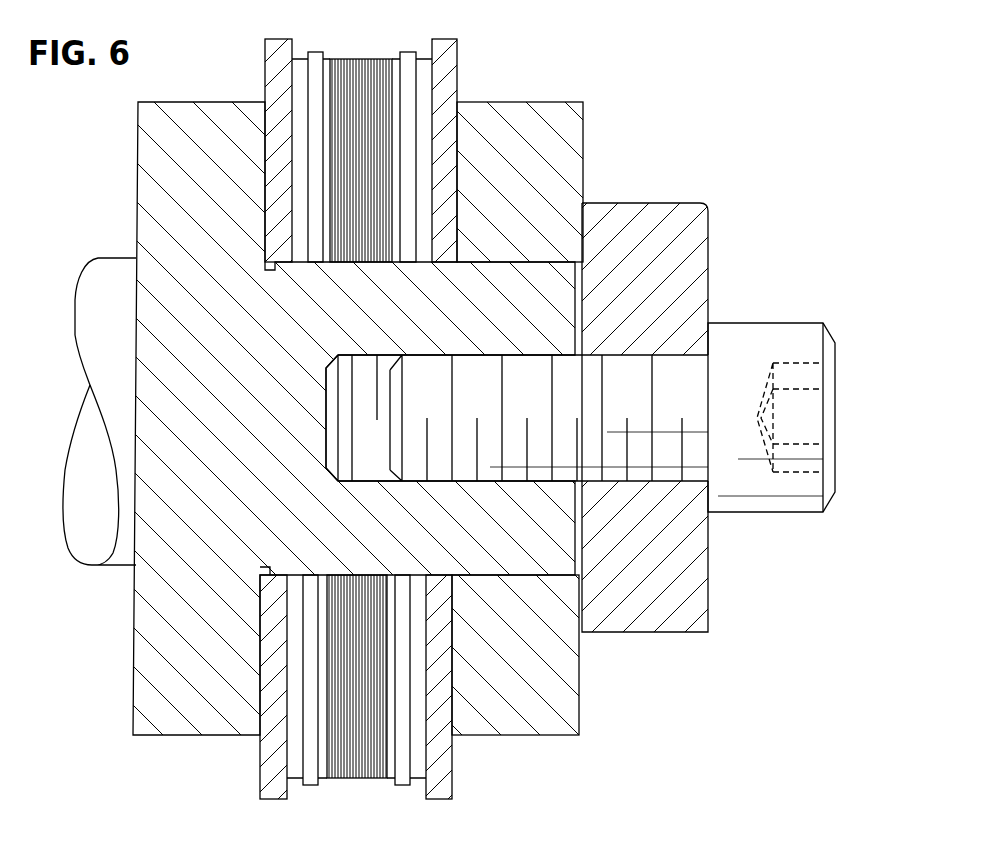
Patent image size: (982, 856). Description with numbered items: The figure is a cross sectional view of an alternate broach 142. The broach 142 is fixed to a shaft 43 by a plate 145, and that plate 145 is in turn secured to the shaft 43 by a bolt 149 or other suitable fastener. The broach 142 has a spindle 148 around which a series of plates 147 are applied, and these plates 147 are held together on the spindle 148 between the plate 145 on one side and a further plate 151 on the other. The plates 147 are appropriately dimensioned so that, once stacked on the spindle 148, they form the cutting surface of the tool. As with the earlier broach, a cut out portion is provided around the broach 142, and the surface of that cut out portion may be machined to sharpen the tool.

The alternate broach 142 is at (617, 85).
The spindle 148 is at (183, 102).
The series of plates 147 is at (285, 38).
The plate 145 is at (708, 202).
The bolt 149 is at (800, 322).
The plate 151 is at (579, 735).
The shaft 43 is at (82, 268).